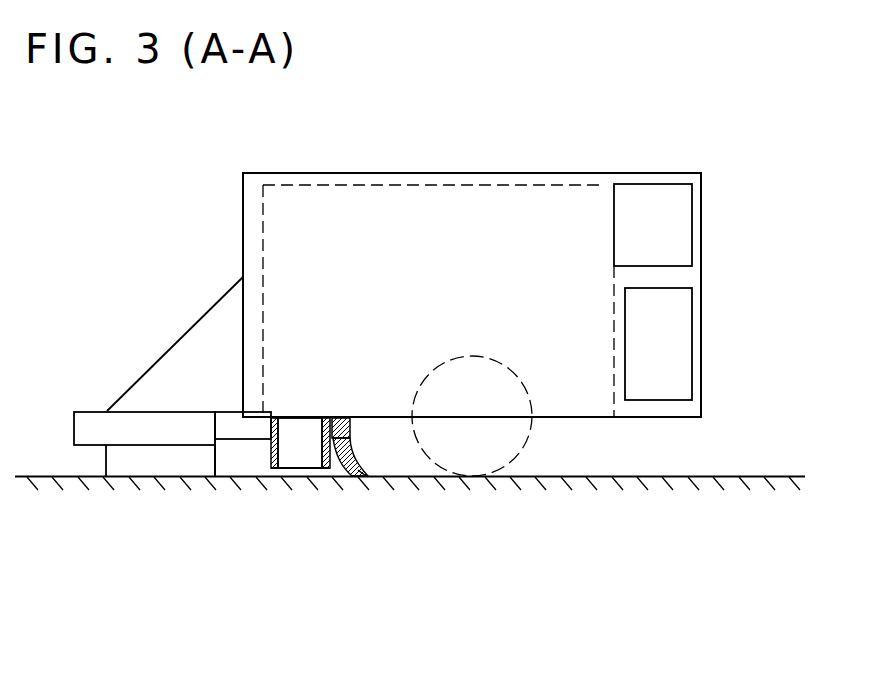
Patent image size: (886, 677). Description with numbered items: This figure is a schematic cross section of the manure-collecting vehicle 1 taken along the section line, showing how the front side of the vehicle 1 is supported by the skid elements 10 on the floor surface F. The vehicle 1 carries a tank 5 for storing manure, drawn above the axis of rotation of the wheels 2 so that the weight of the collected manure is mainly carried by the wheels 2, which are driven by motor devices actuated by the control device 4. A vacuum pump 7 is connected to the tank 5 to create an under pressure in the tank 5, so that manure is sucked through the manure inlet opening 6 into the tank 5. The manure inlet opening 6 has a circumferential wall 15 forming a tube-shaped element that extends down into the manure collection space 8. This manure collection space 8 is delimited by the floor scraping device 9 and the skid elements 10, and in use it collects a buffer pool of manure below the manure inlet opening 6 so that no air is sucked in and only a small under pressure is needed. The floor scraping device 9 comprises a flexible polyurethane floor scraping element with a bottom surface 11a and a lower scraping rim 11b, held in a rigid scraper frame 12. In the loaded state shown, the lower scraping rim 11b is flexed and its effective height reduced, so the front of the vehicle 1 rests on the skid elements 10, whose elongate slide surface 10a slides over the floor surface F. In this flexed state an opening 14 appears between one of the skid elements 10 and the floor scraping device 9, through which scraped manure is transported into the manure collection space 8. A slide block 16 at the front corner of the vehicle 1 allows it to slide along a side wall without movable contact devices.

The vehicle 1 is at (510, 141).
The wheel 2 is at (492, 445).
The control device 4 is at (664, 348).
The tank 5 is at (369, 229).
The manure inlet opening 6 is at (299, 432).
The vacuum pump 7 is at (664, 227).
The manure collection space 8 is at (304, 473).
The floor scraping device 9 is at (232, 428).
The skid element 10 is at (136, 426).
The slide surface 10a is at (135, 477).
The bottom surface 11a is at (356, 477).
The lower scraping rim 11b is at (351, 460).
The scraper frame 12 is at (350, 427).
The opening 14 is at (217, 475).
The circumferential wall 15 is at (275, 446).
The slide block 16 is at (91, 427).
The floor surface F is at (728, 475).